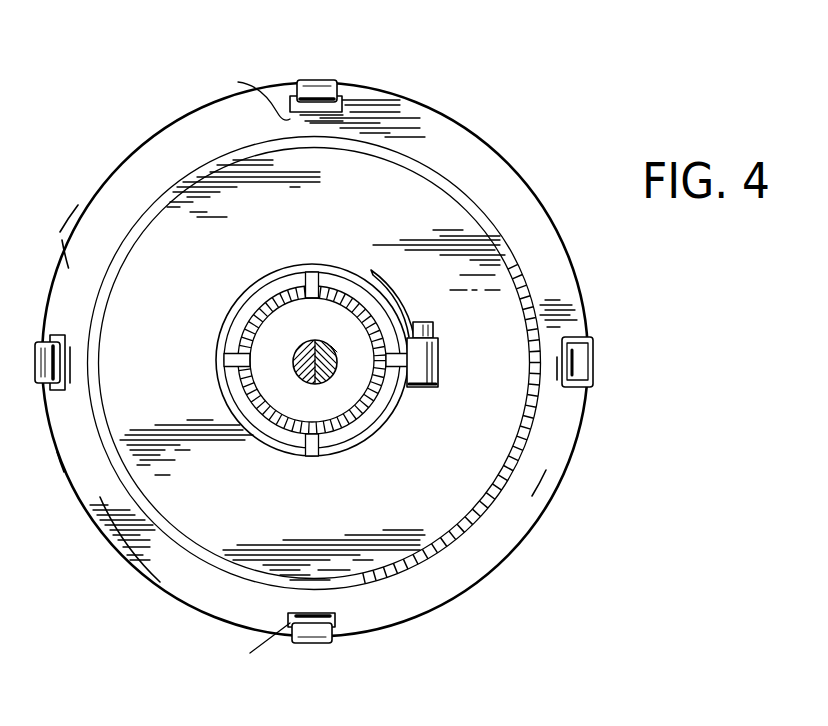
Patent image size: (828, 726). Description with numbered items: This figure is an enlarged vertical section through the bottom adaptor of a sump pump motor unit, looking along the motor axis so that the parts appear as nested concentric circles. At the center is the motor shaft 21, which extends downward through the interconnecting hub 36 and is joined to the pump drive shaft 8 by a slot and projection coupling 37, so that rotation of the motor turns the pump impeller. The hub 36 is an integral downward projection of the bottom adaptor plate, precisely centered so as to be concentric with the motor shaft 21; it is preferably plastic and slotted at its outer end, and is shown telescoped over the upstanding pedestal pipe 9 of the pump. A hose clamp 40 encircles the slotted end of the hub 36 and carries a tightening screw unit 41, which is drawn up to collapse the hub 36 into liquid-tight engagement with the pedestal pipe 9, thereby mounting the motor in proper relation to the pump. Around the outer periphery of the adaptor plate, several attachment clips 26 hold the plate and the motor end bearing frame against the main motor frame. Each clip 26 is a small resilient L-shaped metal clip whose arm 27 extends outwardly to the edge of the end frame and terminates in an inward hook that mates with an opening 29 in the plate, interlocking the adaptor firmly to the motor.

The drive shaft 8 is at (312, 383).
The pedestal pipe 9 is at (328, 447).
The motor shaft 21 is at (344, 344).
The attachment clip 26 is at (323, 78).
The clip arm 27 is at (318, 647).
The opening 29 is at (243, 374).
The interconnecting hub 36 is at (373, 428).
The slot and projection coupling 37 is at (303, 384).
The hose clamp 40 is at (257, 285).
The tightening screw unit 41 is at (440, 358).